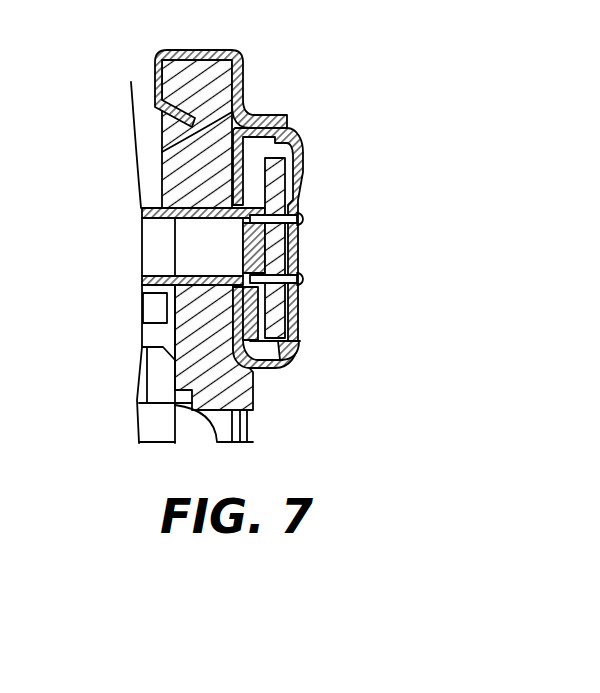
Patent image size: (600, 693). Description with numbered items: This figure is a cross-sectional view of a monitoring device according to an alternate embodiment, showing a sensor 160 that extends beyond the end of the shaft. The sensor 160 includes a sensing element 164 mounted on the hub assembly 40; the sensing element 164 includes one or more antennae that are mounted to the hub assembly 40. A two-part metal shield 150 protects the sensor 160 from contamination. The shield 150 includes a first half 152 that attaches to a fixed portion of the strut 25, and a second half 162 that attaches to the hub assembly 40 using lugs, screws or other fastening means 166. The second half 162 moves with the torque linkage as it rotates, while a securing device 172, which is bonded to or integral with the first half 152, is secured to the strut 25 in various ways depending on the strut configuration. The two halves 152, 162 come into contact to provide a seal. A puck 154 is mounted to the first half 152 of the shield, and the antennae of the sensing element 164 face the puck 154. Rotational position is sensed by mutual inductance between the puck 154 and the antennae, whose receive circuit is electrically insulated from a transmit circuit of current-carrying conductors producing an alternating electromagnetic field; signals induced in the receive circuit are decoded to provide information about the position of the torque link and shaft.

The strut 25 is at (220, 95).
The hub assembly 40 is at (205, 254).
The two-part metal shield 150 is at (232, 250).
The first half 152 is at (137, 153).
The puck 154 is at (302, 342).
The sensor 160 is at (277, 250).
The second half 162 is at (302, 356).
The sensing element 164 is at (275, 190).
The fastening means 166 is at (382, 240).
The securing device 172 is at (200, 48).